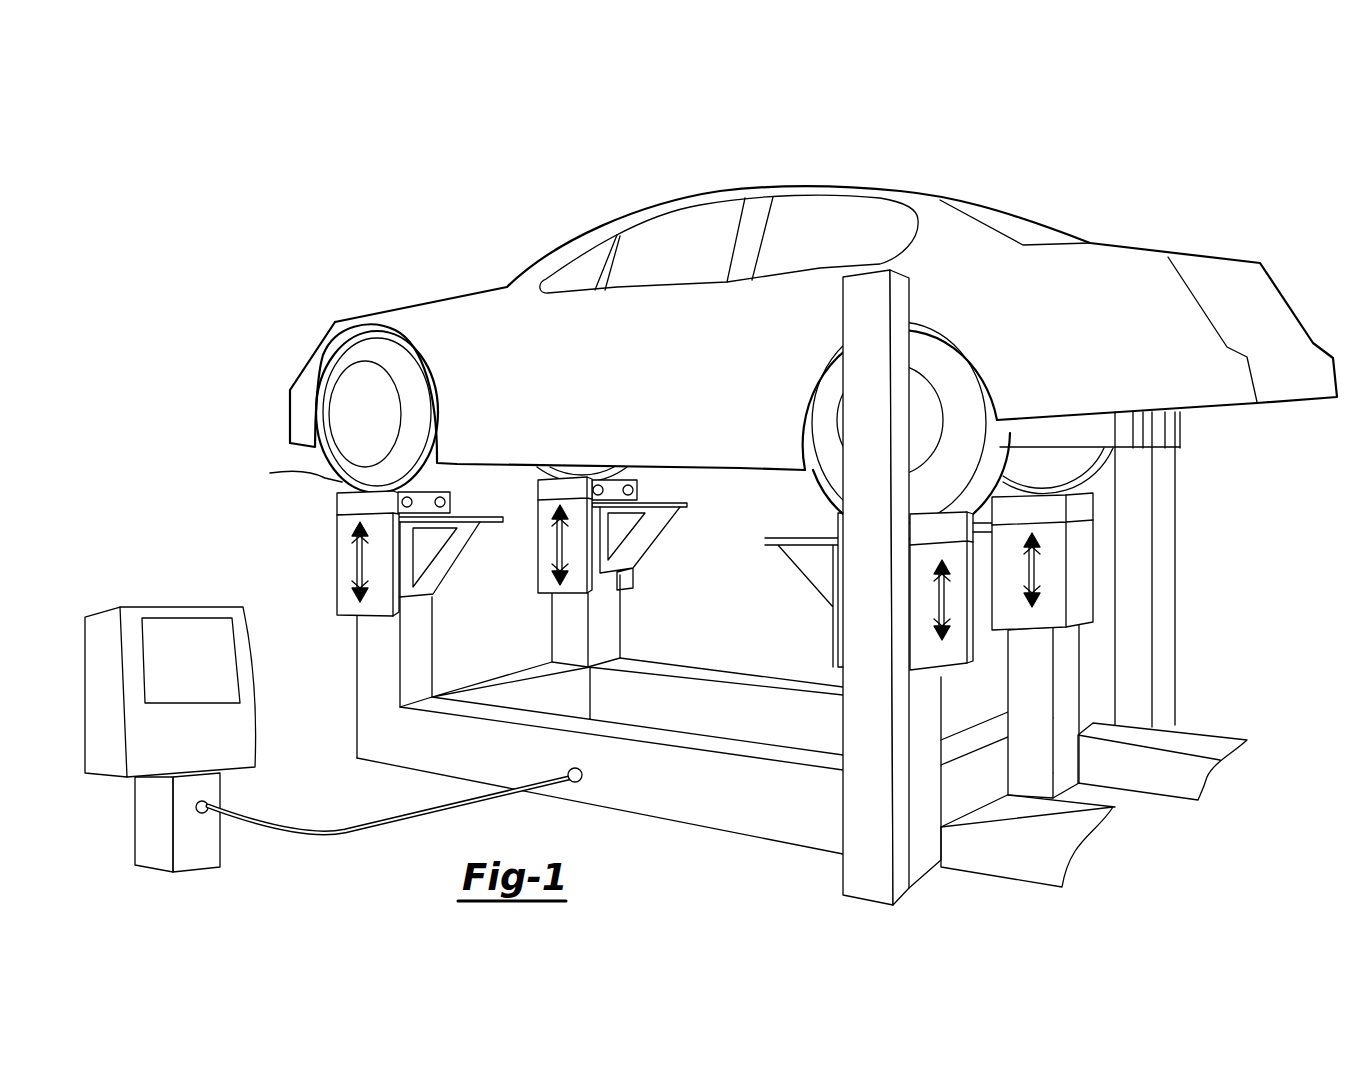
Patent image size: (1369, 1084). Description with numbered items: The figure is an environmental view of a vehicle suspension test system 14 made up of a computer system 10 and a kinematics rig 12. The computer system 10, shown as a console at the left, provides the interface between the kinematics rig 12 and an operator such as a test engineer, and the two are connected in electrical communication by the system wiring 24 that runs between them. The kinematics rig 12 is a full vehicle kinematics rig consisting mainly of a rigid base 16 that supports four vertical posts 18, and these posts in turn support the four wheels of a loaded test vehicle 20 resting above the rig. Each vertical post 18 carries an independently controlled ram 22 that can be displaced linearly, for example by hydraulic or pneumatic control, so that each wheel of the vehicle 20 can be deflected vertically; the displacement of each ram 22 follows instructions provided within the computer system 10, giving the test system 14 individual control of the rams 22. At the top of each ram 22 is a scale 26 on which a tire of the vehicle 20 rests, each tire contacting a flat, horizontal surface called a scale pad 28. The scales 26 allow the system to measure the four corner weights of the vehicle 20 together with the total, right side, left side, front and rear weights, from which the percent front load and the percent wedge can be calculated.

The computer system 10 is at (180, 603).
The kinematics rig 12 is at (730, 587).
The vehicle suspension test system 14 is at (772, 327).
The rigid base 16 is at (790, 818).
The vertical posts 18 is at (368, 643).
The loaded test vehicle 20 is at (450, 303).
The ram 22 is at (347, 592).
The system wiring 24 is at (403, 812).
The scale 26 is at (341, 501).
The scale pad 28 is at (332, 470).